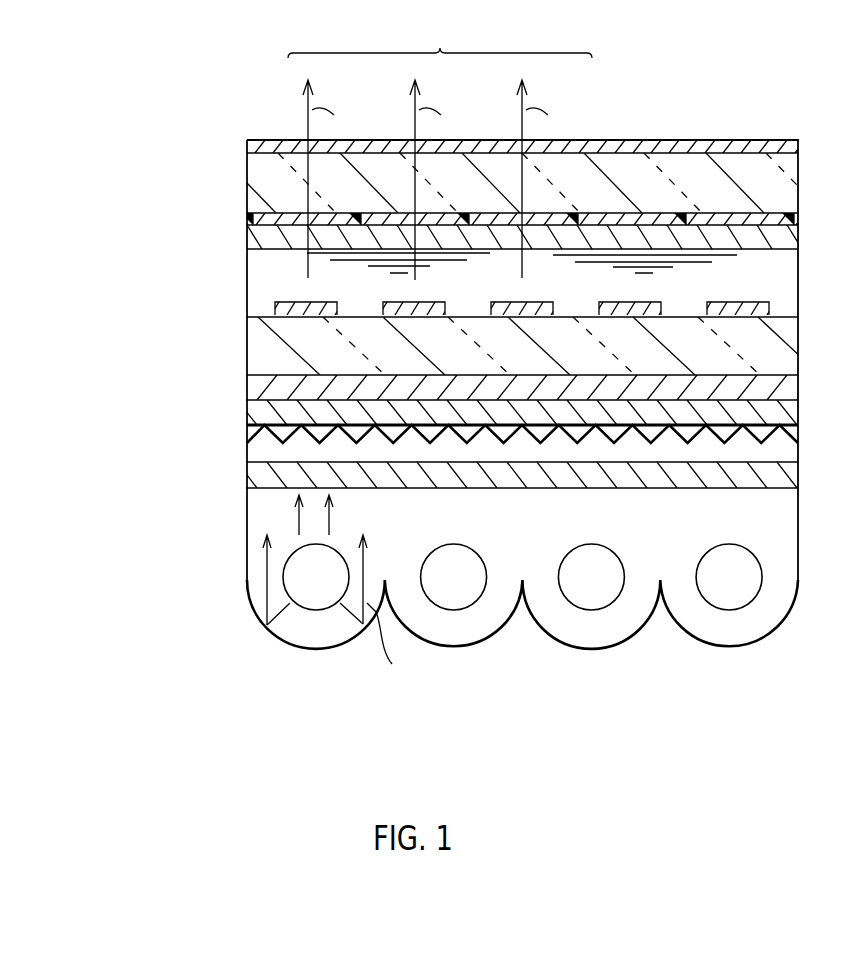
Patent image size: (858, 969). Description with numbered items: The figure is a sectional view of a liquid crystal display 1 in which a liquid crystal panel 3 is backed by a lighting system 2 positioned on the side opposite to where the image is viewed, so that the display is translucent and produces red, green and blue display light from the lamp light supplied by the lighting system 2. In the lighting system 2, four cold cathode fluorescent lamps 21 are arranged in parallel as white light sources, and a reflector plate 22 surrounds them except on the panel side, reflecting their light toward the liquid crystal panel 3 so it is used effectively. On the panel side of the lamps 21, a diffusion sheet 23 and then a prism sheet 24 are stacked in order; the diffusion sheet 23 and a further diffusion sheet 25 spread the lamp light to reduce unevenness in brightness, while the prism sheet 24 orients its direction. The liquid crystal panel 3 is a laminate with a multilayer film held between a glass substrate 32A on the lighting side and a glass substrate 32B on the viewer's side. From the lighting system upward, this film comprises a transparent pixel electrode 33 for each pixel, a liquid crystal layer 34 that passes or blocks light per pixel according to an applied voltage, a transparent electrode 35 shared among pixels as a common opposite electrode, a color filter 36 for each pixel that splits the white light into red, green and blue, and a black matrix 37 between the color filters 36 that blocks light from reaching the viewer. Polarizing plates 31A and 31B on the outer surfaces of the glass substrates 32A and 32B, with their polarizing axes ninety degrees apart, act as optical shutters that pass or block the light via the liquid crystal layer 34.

The liquid crystal display 1 is at (688, 60).
The lighting system 2 is at (148, 402).
The liquid crystal panel 3 is at (148, 118).
The cold cathode fluorescent lamp 21 is at (296, 575).
The reflector plate 22 is at (247, 538).
The diffusion sheet 23 is at (247, 475).
The prism sheet 24 is at (247, 434).
The diffusion sheet 25 is at (247, 412).
The polarizing plate 31A is at (247, 386).
The polarizing plate 31B is at (247, 146).
The glass substrate 32A is at (247, 346).
The glass substrate 32B is at (247, 170).
The transparent pixel electrode 33 is at (275, 309).
The liquid crystal layer 34 is at (247, 296).
The transparent electrode 35 is at (247, 252).
The color filter 36 is at (247, 237).
The black matrix 37 is at (247, 219).